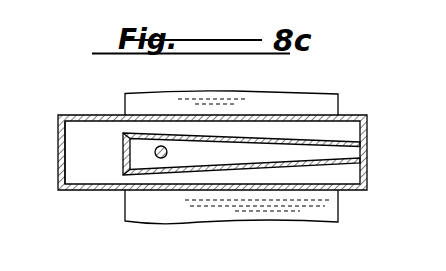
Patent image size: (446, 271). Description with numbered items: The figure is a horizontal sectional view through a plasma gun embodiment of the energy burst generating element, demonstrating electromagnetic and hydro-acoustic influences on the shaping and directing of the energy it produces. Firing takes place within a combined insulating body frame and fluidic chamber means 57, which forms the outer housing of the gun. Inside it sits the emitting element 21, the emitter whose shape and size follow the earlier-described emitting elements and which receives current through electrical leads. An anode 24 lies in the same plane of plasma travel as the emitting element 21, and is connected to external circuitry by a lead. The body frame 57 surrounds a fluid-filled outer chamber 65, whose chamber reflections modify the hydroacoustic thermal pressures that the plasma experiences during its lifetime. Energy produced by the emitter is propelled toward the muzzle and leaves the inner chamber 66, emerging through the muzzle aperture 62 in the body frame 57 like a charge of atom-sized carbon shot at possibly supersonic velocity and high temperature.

The emitting element 21 is at (161, 158).
The anode 24 is at (225, 153).
The combined insulating body frame and fluidic chamber means 57 is at (58, 168).
The muzzle aperture 62 is at (362, 152).
The fluid-filled outer chamber 65 is at (95, 167).
The inner chamber 66 is at (137, 145).